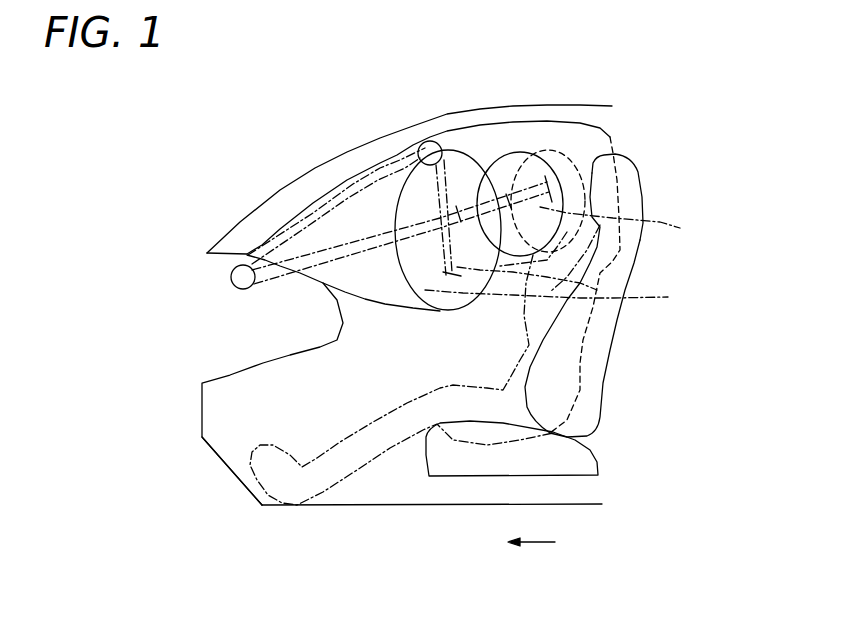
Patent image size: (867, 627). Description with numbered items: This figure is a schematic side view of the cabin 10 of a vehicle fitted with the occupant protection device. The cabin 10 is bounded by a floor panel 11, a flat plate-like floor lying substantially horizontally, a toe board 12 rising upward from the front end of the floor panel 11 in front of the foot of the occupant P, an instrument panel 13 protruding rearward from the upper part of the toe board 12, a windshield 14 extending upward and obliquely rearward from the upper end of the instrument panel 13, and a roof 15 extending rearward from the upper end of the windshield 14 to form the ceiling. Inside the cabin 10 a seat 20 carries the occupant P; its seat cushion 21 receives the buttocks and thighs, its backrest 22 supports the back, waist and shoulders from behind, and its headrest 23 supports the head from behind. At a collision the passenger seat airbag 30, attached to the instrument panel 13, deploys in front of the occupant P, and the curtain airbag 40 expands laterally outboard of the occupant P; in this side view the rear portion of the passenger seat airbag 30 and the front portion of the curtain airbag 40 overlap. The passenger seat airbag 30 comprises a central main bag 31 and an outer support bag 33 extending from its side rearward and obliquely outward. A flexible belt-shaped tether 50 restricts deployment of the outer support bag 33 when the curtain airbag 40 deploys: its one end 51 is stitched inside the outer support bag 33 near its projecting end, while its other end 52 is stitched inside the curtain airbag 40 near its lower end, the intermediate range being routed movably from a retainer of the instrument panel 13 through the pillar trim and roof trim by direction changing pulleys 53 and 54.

The cabin 10 is at (260, 134).
The floor panel 11 is at (413, 508).
The toe board 12 is at (240, 484).
The instrument panel 13 is at (317, 347).
The windshield 14 is at (277, 196).
The roof 15 is at (590, 107).
The seat 20 is at (564, 277).
The seat cushion 21 is at (600, 462).
The backrest 22 is at (605, 385).
The headrest 23 is at (642, 187).
The passenger seat airbag 30 is at (256, 214).
The main bag 31 is at (460, 150).
The outer support bag 33 is at (497, 152).
The curtain airbag 40 is at (517, 150).
The tether 50 is at (347, 180).
The one end of the tether 51 is at (621, 224).
The other end of the tether 52 is at (558, 288).
The pulley 53 is at (229, 277).
The pulley 54 is at (433, 141).
The occupant P is at (553, 135).